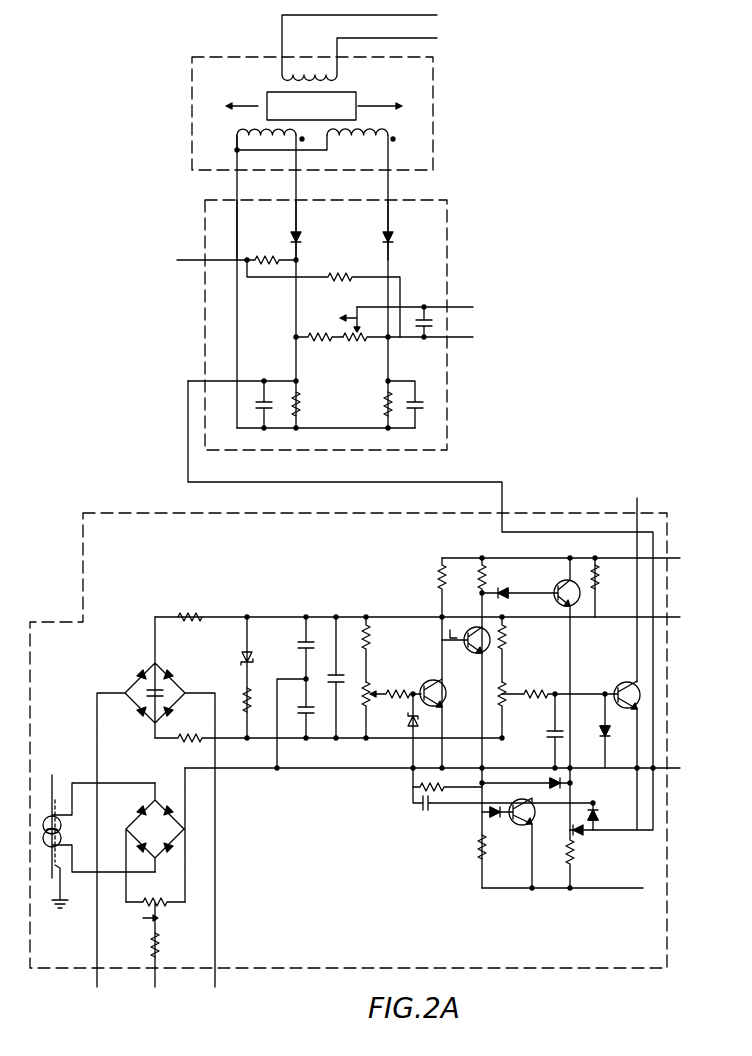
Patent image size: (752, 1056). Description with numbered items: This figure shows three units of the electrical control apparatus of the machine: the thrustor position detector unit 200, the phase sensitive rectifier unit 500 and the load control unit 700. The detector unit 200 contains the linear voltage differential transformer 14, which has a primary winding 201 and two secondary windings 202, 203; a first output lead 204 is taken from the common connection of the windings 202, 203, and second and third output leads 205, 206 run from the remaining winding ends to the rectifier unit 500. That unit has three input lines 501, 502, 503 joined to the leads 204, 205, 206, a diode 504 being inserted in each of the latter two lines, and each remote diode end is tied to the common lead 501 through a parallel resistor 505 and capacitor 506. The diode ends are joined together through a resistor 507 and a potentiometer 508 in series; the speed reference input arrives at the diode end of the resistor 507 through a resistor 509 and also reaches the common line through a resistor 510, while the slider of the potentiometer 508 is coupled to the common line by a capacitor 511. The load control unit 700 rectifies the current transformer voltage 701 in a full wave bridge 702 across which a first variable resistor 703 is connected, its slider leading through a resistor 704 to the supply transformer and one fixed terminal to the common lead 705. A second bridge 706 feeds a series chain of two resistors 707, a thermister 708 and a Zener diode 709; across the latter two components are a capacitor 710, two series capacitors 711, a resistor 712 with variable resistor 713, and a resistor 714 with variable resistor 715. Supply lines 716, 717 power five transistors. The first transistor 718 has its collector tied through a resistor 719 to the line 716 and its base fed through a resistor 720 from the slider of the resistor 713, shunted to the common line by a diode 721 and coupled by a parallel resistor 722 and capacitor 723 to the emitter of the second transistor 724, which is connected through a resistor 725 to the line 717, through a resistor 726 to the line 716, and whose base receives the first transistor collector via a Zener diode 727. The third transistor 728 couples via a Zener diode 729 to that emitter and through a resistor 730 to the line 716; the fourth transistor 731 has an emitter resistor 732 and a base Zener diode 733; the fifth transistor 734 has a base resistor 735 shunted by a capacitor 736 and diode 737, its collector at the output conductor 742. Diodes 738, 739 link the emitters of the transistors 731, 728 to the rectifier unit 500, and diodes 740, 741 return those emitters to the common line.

The linear voltage differential transformer 14 is at (320, 115).
The thrustor position detector unit 200 is at (433, 128).
The primary winding 201 is at (338, 72).
The secondary winding 202 is at (238, 131).
The secondary winding 203 is at (361, 148).
The first output lead 204 is at (237, 180).
The second output lead 205 is at (298, 186).
The third output lead 206 is at (390, 186).
The phase sensitive rectifier unit 500 is at (450, 386).
The input line 501 is at (237, 228).
The input line 502 is at (298, 214).
The input line 503 is at (390, 214).
The diode 504 is at (394, 238).
The resistor 505 is at (387, 398).
The capacitor 506 is at (425, 411).
The resistor 507 is at (320, 333).
The potentiometer 508 is at (360, 345).
The resistor 509 is at (237, 248).
The resistor 510 is at (358, 262).
The capacitor 511 is at (434, 324).
The load control unit 700 is at (663, 785).
The current transformer 701 is at (99, 841).
The full wave rectifying bridge 702 is at (166, 838).
The first variable resistor 703 is at (166, 903).
The resistor 704 is at (162, 948).
The common lead 705 is at (288, 776).
The second full-wave rectifying bridge 706 is at (133, 690).
The resistor 707 is at (180, 746).
The thermister 708 is at (243, 700).
The Zener diode 709 is at (244, 655).
The capacitor 710 is at (331, 670).
The capacitor 711 is at (313, 716).
The resistor 712 is at (372, 639).
The variable resistor 713 is at (370, 690).
The resistor 714 is at (508, 637).
The variable resistor 715 is at (507, 692).
The supply line 716 is at (610, 560).
The supply line 717 is at (641, 889).
The first transistor 718 is at (445, 704).
The resistor 719 is at (440, 575).
The resistor 720 is at (410, 700).
The diode 721 is at (410, 732).
The resistor 722 is at (418, 786).
The capacitor 723 is at (415, 804).
The second transistor 724 is at (472, 655).
The resistor 725 is at (478, 848).
The resistor 726 is at (484, 570).
The Zener diode 727 is at (449, 628).
The third transistor 728 is at (512, 826).
The Zener diode 729 is at (488, 812).
The resistor 730 is at (599, 572).
The fourth transistor 731 is at (556, 583).
The resistor 732 is at (576, 852).
The Zener diode 733 is at (502, 587).
The fifth transistor 734 is at (616, 690).
The resistor 735 is at (538, 689).
The capacitor 736 is at (548, 732).
The diode 737 is at (614, 770).
The diode 738 is at (584, 829).
The diode 739 is at (599, 813).
The diode 740 is at (556, 780).
The diode 741 is at (540, 793).
The conductor 742 is at (634, 620).